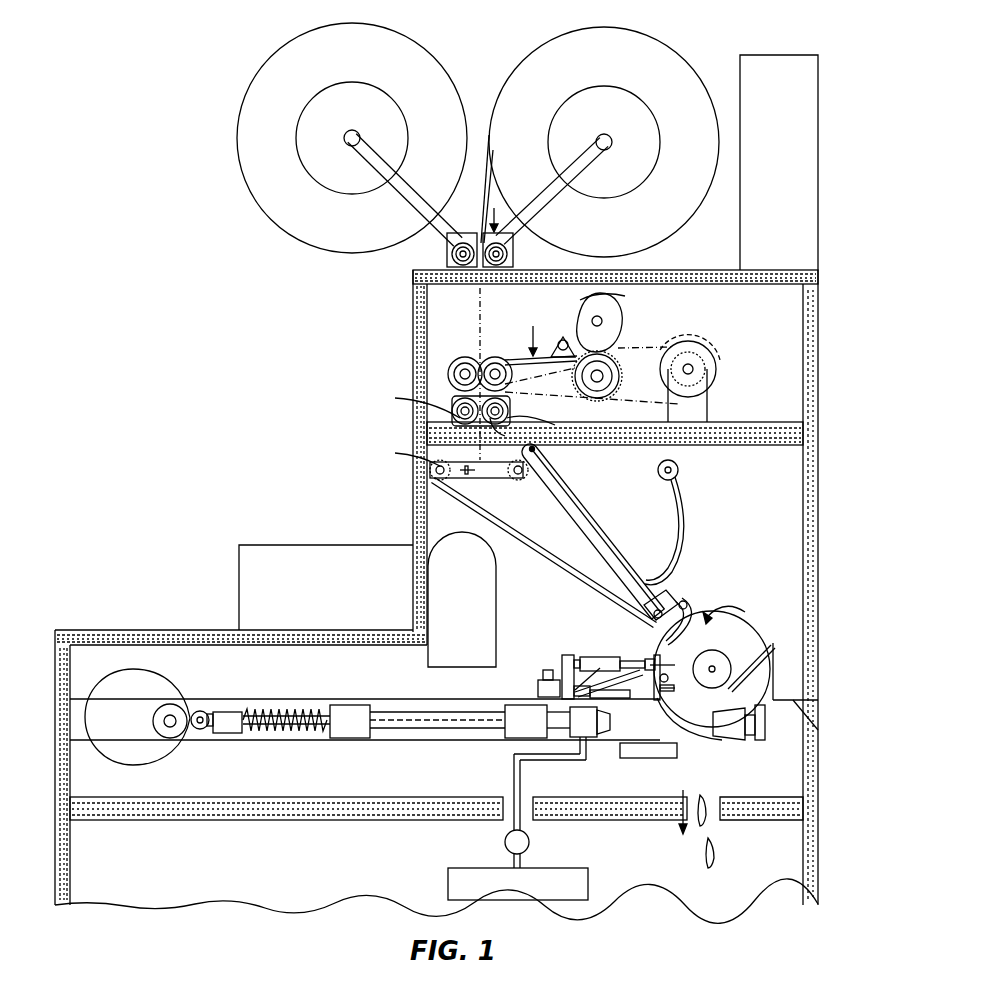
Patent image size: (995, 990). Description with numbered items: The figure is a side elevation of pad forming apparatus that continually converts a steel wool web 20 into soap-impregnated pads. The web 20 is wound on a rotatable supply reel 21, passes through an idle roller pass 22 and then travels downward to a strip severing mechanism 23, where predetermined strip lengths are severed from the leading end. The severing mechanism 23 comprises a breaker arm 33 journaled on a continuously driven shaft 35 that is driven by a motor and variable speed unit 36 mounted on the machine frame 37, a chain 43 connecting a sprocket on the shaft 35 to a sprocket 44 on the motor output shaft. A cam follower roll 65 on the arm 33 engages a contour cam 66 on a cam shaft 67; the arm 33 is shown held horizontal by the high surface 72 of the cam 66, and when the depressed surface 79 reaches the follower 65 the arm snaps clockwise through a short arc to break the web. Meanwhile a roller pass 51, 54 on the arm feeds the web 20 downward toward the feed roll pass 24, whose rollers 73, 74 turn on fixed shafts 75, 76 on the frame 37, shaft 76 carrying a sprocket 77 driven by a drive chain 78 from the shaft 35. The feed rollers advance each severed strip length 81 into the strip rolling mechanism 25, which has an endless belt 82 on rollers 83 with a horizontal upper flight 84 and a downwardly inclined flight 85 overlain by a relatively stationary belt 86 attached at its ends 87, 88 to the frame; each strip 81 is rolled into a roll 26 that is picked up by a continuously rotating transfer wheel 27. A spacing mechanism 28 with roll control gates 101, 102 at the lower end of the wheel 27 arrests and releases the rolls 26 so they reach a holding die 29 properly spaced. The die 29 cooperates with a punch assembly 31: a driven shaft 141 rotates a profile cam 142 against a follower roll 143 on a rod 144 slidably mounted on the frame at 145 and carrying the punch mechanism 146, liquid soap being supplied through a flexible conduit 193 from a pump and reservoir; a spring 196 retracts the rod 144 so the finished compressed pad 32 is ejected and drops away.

The steel wool web 20 is at (486, 190).
The supply reel 21 is at (650, 48).
The idle roller pass 22 is at (460, 255).
The strip severing mechanism 23 is at (534, 332).
The feed roll pass 24 is at (427, 412).
The strip rolling mechanism 25 is at (608, 565).
The roll 26 is at (688, 600).
The transfer wheel 27 is at (740, 632).
The spacing mechanism 28 is at (594, 652).
The holding die 29 is at (736, 712).
The punch assembly 31 is at (516, 690).
The compressed pad 32 is at (714, 828).
The breaker arm 33 is at (512, 358).
The shaft 35 is at (603, 376).
The motor and variable speed unit 36 is at (716, 364).
The machine frame 37 is at (705, 422).
The chain 43 is at (700, 346).
The sprocket 44 is at (694, 366).
The roller 51 is at (482, 345).
The roller 54 is at (458, 360).
The cam follower roll 65 is at (563, 338).
The contour cam 66 is at (620, 323).
The cam shaft 67 is at (603, 320).
The high surface 72 is at (622, 340).
The roller 73 is at (455, 406).
The roller 74 is at (541, 426).
The shaft 75 is at (411, 400).
The shaft 76 is at (506, 432).
The sprocket 77 is at (508, 395).
The drive chain 78 is at (600, 402).
The depressed surface 79 is at (625, 296).
The severed strip length 81 is at (401, 457).
The endless belt 82 is at (566, 578).
The rollers 83 is at (436, 480).
The upper flight 84 is at (482, 478).
The inclined flight 85 is at (585, 520).
The stationary belt 86 is at (570, 530).
The belt end 87 is at (536, 450).
The belt end 88 is at (679, 469).
The roll control gate 101 is at (646, 656).
The roll control gate 102 is at (677, 696).
The driven shaft 141 is at (176, 716).
The profile cam 142 is at (140, 704).
The follower roll 143 is at (200, 732).
The rod 144 is at (272, 733).
The slide mount 145 is at (520, 738).
The punch mechanism 146 is at (640, 742).
The flexible conduit 193 is at (514, 774).
The spring 196 is at (312, 735).